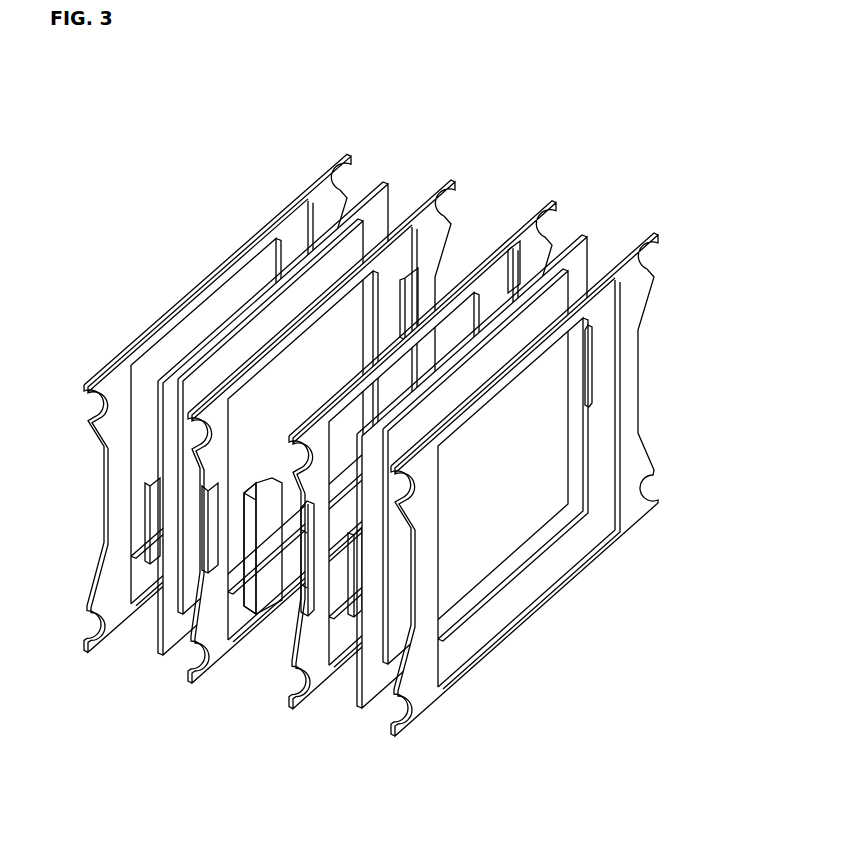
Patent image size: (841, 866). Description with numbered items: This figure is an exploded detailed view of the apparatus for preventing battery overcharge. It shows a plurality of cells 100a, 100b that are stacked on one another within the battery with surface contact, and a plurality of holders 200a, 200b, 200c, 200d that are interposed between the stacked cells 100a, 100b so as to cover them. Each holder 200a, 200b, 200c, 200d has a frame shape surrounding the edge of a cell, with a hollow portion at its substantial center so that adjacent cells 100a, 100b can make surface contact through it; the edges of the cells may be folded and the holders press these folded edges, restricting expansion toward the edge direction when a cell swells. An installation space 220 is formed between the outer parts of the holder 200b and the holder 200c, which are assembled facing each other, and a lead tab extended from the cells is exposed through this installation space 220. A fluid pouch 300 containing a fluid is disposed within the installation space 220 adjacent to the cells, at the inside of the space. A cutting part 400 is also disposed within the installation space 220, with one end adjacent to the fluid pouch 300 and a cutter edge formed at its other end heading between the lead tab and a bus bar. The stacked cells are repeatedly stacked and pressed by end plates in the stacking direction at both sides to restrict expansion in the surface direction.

The holder 200a is at (320, 176).
The cell 100a is at (380, 177).
The holder 200b is at (452, 178).
The holder 200c is at (552, 203).
The cell 100b is at (582, 235).
The holder 200d is at (655, 235).
The fluid pouch 300 is at (253, 543).
The cutting part 400 is at (247, 612).
The installation space 220 is at (314, 610).